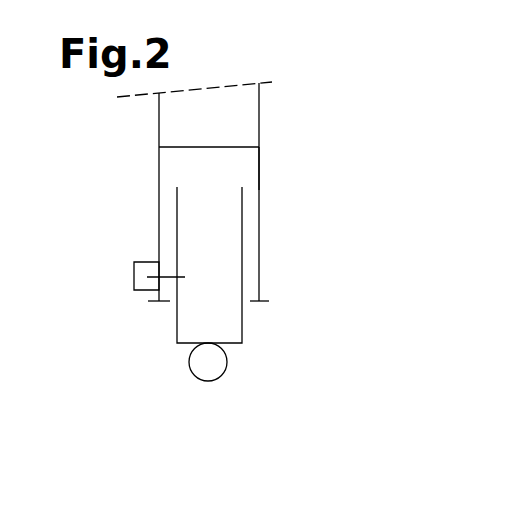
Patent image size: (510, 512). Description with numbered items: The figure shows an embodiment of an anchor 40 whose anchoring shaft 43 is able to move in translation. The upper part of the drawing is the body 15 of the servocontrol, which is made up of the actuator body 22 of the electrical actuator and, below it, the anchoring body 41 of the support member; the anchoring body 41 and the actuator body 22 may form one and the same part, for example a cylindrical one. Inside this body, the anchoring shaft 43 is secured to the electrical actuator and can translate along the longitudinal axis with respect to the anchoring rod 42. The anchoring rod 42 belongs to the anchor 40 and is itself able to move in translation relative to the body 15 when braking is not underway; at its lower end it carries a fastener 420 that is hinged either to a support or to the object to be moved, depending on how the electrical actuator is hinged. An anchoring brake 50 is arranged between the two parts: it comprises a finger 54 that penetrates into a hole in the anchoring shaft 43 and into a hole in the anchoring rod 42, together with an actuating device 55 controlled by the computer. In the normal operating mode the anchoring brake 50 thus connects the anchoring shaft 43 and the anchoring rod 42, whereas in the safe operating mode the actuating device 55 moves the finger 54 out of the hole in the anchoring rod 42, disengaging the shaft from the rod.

The body 15 is at (231, 191).
The actuator body 22 is at (259, 130).
The anchoring body 41 is at (259, 190).
The anchoring shaft 43 is at (159, 200).
The anchor 40 is at (277, 302).
The anchoring rod 42 is at (242, 320).
The fastener 420 is at (227, 365).
The anchoring brake 50 is at (116, 299).
The finger 54 is at (170, 275).
The actuating device 55 is at (134, 264).